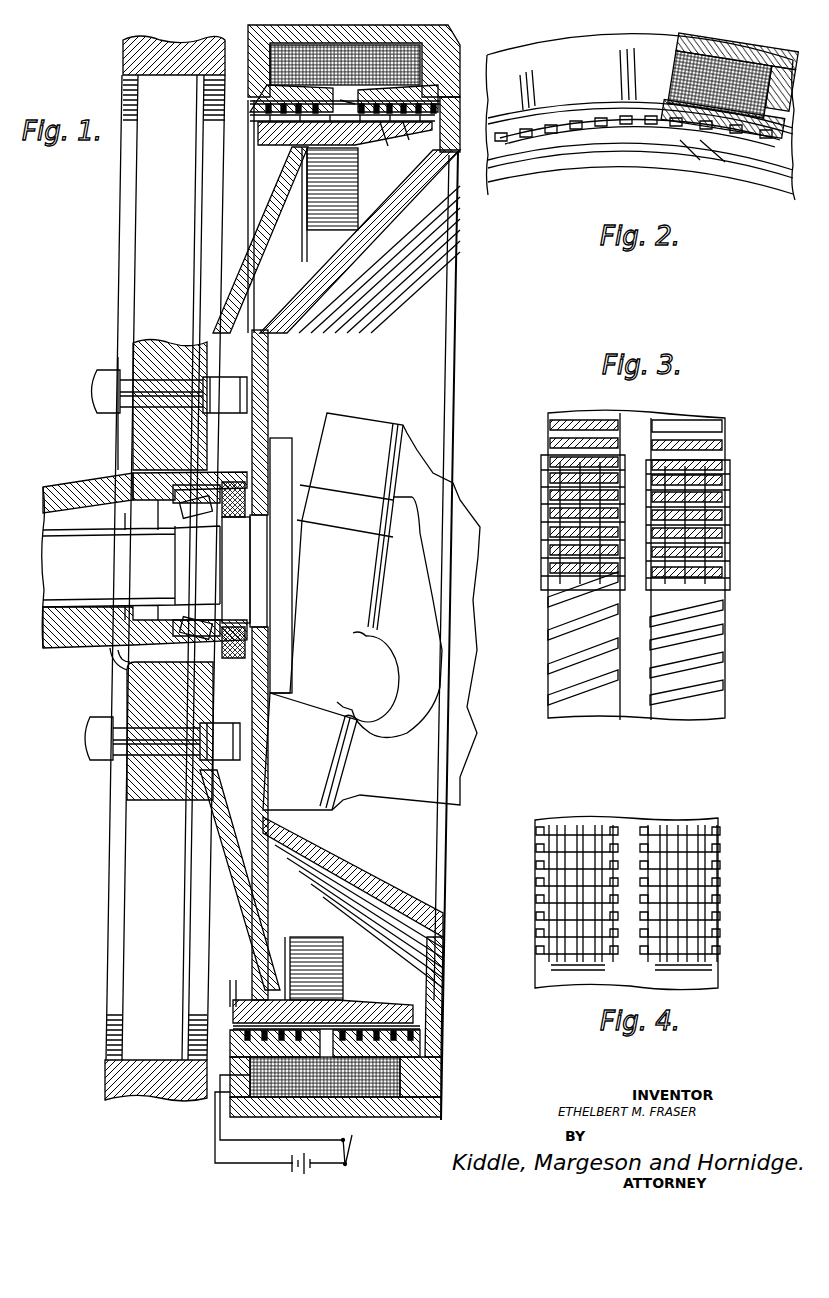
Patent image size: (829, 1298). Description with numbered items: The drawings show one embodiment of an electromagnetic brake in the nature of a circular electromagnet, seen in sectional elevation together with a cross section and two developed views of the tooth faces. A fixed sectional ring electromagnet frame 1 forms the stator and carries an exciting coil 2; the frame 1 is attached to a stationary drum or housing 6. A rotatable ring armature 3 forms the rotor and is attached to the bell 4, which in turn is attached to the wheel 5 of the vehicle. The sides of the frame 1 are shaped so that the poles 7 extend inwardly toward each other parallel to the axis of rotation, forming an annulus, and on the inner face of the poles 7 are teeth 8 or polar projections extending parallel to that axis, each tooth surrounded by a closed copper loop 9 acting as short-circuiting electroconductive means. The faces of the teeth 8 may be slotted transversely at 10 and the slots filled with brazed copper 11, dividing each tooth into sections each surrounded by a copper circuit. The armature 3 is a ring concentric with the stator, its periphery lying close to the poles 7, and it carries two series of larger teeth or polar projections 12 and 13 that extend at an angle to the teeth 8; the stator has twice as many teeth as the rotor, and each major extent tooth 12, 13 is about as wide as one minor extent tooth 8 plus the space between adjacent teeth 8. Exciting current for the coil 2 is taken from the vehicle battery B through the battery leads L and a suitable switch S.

In FIG. 1, the electromagnet frame 1 is at (446, 75).
In FIG. 2, the electromagnet frame 1 is at (778, 58).
In FIG. 1, the exciting coil 2 is at (356, 58).
In FIG. 2, the exciting coil 2 is at (757, 52).
In FIG. 1, the ring armature 3 is at (250, 97).
In FIG. 2, the ring armature 3 is at (745, 170).
In FIG. 3, the ring armature 3 is at (548, 640).
In FIG. 1, the bell 4 is at (250, 108).
In FIG. 1, the wheel 5 is at (136, 318).
In FIG. 1, the stationary drum or housing 6 is at (446, 297).
In FIG. 1, the poles 7 is at (382, 92).
In FIG. 2, the poles 7 is at (770, 114).
In FIG. 1, the teeth 8 is at (282, 114).
In FIG. 2, the teeth 8 is at (672, 118).
In FIG. 3, the teeth 8 is at (570, 422).
In FIG. 4, the teeth 8 is at (536, 868).
In FIG. 1, the closed copper loop 9 is at (352, 101).
In FIG. 2, the closed copper loop 9 is at (675, 140).
In FIG. 3, the closed copper loop 9 is at (542, 496).
In FIG. 4, the closed copper loop 9 is at (612, 826).
In FIG. 3, the slots 10 is at (541, 524).
In FIG. 4, the slots 10 is at (578, 822).
In FIG. 1, the copper filling 11 is at (405, 123).
In FIG. 4, the copper filling 11 is at (568, 902).
In FIG. 1, the major extent teeth 12 is at (322, 150).
In FIG. 3, the major extent teeth 12 is at (548, 622).
In FIG. 1, the major extent teeth 13 is at (386, 123).
In FIG. 2, the major extent teeth 13 is at (730, 150).
In FIG. 3, the major extent teeth 13 is at (712, 626).
In FIG. 1, the battery leads L is at (228, 1160).
In FIG. 1, the battery B is at (290, 1170).
In FIG. 1, the switch S is at (355, 1150).